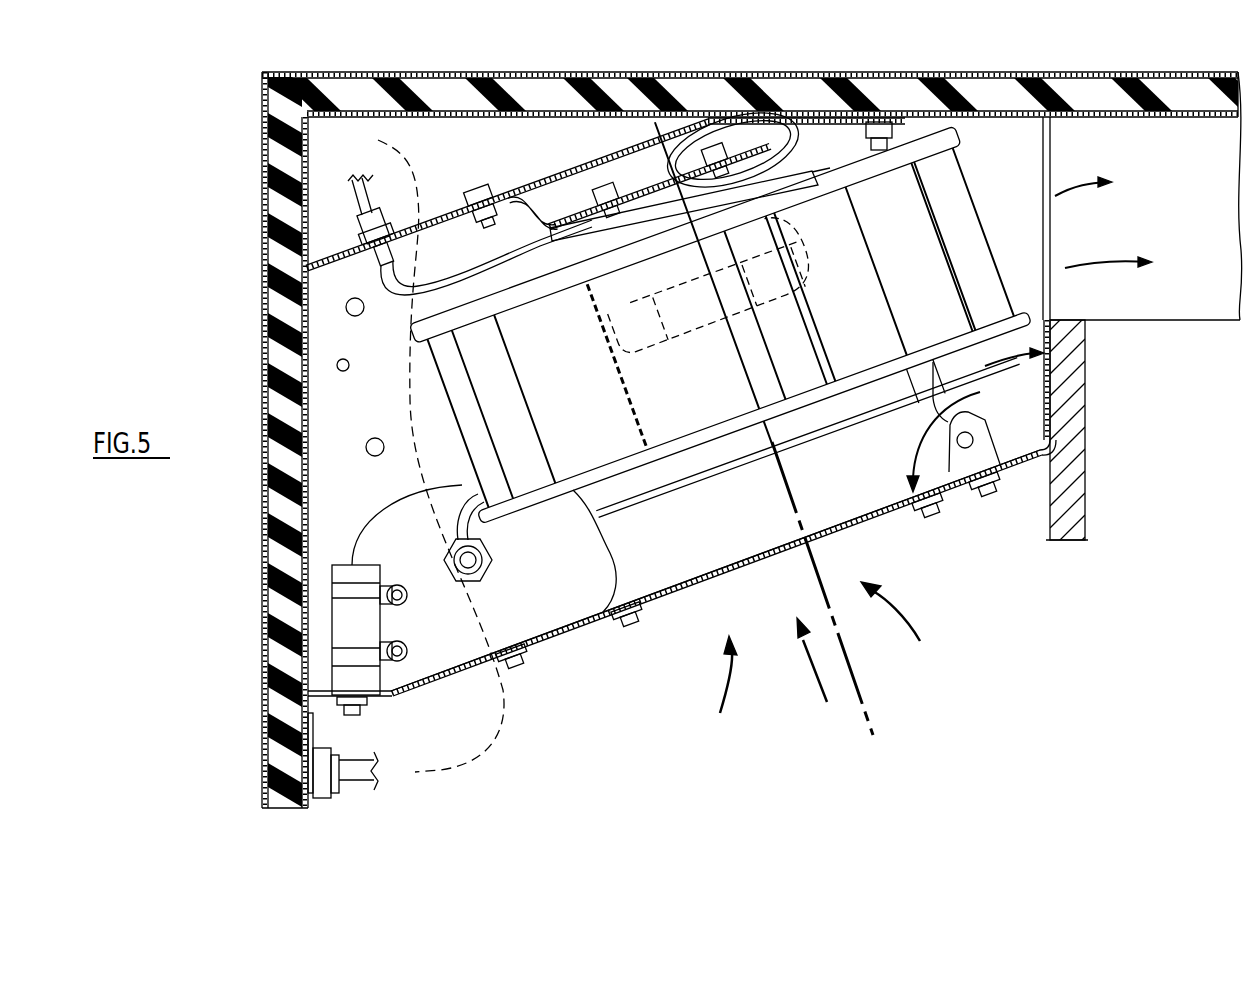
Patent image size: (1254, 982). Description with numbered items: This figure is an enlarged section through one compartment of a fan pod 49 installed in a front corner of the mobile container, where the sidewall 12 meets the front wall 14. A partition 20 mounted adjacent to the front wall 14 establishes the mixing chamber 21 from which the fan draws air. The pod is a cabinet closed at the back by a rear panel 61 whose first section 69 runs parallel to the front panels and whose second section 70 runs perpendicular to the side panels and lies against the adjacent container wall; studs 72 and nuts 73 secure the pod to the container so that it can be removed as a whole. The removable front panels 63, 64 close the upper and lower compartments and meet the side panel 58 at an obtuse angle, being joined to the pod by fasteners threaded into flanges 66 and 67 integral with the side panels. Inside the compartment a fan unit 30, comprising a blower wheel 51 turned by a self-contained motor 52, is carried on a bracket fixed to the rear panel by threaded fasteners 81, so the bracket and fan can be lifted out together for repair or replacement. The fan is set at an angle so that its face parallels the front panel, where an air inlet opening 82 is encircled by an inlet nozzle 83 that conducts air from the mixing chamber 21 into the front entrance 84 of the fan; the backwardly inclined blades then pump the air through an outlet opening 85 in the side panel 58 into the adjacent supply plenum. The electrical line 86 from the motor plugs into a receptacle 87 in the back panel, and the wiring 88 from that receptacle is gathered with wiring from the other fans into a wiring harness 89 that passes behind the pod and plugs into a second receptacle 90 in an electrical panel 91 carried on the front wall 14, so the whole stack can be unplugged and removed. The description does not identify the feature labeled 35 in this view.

The sidewall 12 is at (428, 70).
The front wall 14 is at (265, 605).
The partition 20 is at (1078, 490).
The mixing chamber 21 is at (865, 555).
The fan unit 30 is at (975, 185).
The air duct 35 is at (1175, 118).
The fan pod 49 is at (597, 662).
The blower wheel 51 is at (988, 270).
The self-contained motor 52 is at (746, 172).
The side panel 58 is at (1055, 368).
The rear panel 61 is at (542, 175).
The front panel 63 is at (895, 518).
The front panel 64 is at (895, 518).
The flange 66 is at (365, 650).
The flange 67 is at (1047, 430).
The first section 69 is at (618, 165).
The second section 70 is at (921, 118).
The stud 72 is at (876, 132).
The nut 73 is at (858, 135).
The threaded fastener 81 is at (486, 195).
The air inlet opening 82 is at (700, 582).
The inlet nozzle 83 is at (807, 452).
The front entrance 84 is at (868, 400).
The outlet opening 85 is at (1052, 290).
The electrical line 86 is at (507, 268).
The receptacle 87 is at (362, 238).
The wiring 88 is at (445, 773).
The wiring harness 89 is at (355, 790).
The second receptacle 90 is at (322, 808).
The electrical panel 91 is at (318, 718).